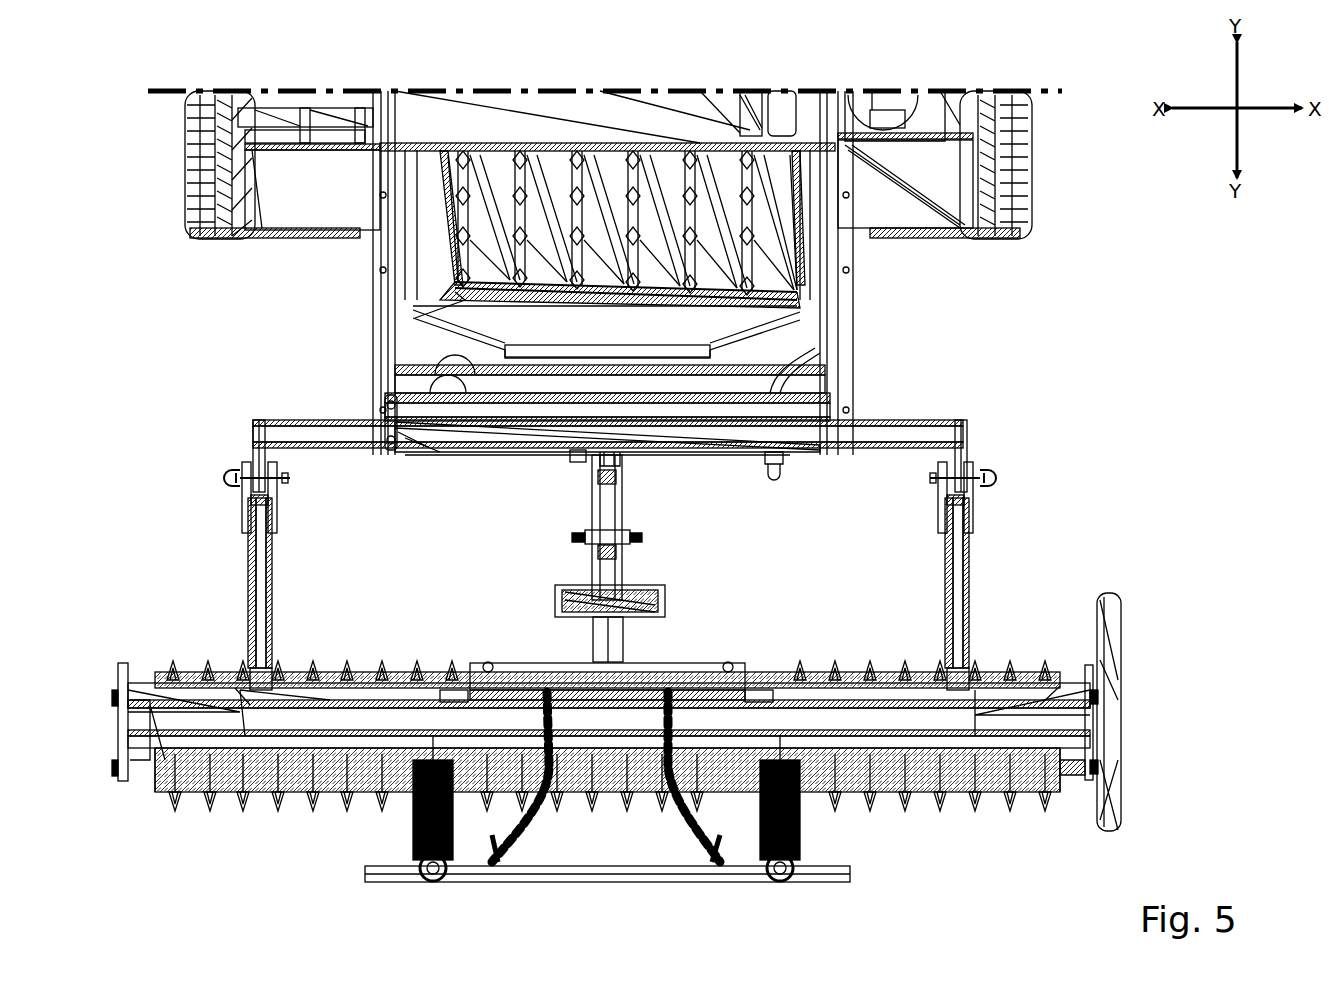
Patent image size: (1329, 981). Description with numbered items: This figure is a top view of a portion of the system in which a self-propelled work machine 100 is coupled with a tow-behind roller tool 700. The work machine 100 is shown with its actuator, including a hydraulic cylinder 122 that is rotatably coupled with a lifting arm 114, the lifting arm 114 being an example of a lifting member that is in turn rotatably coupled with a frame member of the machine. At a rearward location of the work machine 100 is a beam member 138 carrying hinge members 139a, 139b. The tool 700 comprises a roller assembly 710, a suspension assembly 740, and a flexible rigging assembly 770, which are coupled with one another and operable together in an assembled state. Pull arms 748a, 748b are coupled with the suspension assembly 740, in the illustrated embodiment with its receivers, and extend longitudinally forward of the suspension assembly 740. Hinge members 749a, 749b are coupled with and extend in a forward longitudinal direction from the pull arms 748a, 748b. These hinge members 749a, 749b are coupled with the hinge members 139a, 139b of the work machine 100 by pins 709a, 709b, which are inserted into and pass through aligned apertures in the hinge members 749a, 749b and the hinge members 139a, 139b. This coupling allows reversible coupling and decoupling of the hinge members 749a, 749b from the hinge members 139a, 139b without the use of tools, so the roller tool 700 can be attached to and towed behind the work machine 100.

The self-propelled work machine 100 is at (1000, 303).
The beam member 138 is at (327, 432).
The hinge member 139a is at (255, 442).
The hinge member 139b is at (968, 452).
The pin 709a is at (282, 480).
The pin 709b is at (990, 478).
The hinge member 749a is at (275, 493).
The hinge member 749b is at (938, 490).
The pull arm 748a is at (258, 600).
The pull arm 748b is at (962, 582).
The hydraulic cylinder 122 is at (605, 523).
The lifting arm 114 is at (606, 633).
The flexible rigging assembly 770 is at (639, 558).
The tow-behind roller tool 700 is at (680, 622).
The roller assembly 710 is at (1165, 698).
The suspension assembly 740 is at (840, 828).